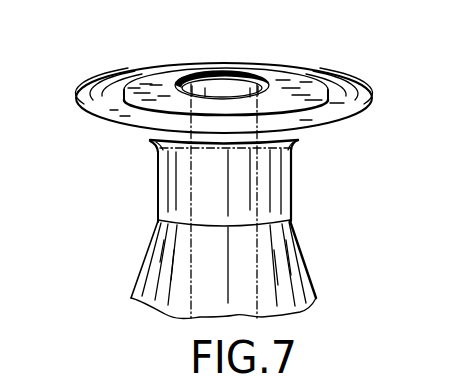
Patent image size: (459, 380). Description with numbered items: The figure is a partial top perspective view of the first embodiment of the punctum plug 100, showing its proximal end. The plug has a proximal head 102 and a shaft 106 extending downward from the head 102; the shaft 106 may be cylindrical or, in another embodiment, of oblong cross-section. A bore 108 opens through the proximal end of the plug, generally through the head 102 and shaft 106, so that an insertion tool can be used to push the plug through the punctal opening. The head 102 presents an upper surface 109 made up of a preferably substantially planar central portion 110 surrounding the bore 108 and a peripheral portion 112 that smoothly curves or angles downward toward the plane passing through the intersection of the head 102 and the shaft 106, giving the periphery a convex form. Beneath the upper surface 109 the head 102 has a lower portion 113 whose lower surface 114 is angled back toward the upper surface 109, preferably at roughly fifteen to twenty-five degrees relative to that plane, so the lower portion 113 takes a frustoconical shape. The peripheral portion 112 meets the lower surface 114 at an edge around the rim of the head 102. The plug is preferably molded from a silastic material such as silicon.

The punctum plug 100 is at (79, 58).
The proximal head 102 is at (369, 108).
The shaft 106 is at (272, 238).
The bore 108 is at (225, 91).
The upper surface 109 is at (164, 76).
The central portion 110 is at (291, 90).
The peripheral portion 112 is at (316, 125).
The lower portion 113 is at (263, 148).
The lower surface 114 is at (156, 160).